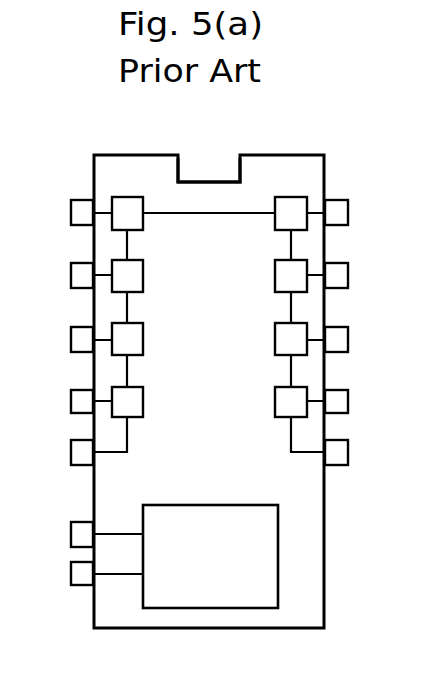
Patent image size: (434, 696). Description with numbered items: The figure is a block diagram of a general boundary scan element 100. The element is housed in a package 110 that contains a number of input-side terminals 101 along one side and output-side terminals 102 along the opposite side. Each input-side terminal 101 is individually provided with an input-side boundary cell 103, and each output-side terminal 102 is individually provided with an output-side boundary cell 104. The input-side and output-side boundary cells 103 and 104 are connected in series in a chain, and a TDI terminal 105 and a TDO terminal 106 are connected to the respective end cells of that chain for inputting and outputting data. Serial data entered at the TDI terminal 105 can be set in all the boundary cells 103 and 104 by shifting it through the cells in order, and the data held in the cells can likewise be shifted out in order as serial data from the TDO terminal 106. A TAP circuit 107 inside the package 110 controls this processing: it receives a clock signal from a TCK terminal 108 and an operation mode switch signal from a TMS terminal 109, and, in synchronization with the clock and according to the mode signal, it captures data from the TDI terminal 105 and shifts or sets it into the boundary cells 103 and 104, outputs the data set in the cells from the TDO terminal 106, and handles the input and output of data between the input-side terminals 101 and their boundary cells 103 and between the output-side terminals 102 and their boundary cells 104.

The boundary scan element 100 is at (280, 125).
The input-side terminals 101 is at (67, 195).
The output-side terminals 102 is at (354, 195).
The input-side boundary cells 103 is at (153, 182).
The output-side boundary cells 104 is at (293, 197).
The TDI terminal 105 is at (71, 452).
The TDO terminal 106 is at (348, 452).
The TAP circuit 107 is at (218, 505).
The TCK terminal 108 is at (71, 535).
The TMS terminal 109 is at (71, 575).
The package 110 is at (212, 182).